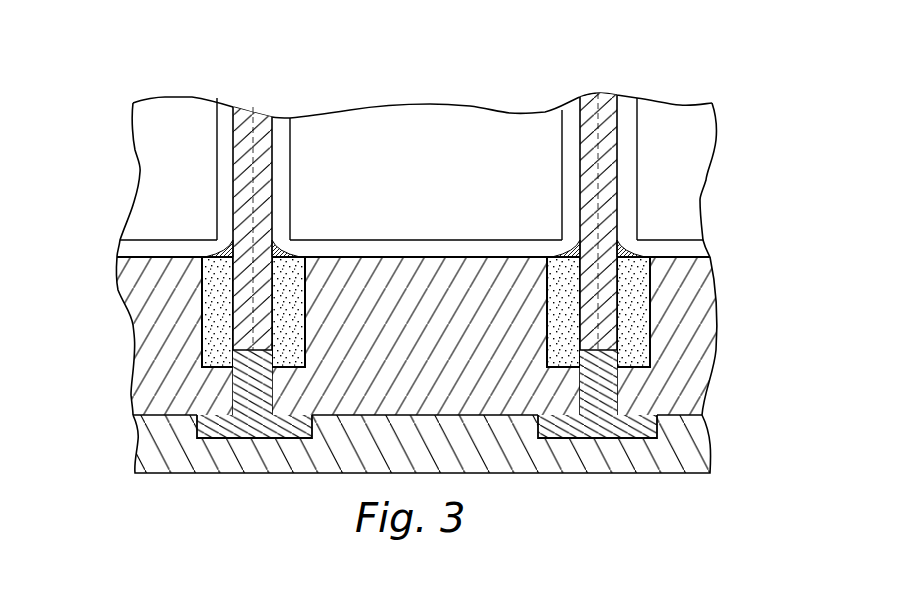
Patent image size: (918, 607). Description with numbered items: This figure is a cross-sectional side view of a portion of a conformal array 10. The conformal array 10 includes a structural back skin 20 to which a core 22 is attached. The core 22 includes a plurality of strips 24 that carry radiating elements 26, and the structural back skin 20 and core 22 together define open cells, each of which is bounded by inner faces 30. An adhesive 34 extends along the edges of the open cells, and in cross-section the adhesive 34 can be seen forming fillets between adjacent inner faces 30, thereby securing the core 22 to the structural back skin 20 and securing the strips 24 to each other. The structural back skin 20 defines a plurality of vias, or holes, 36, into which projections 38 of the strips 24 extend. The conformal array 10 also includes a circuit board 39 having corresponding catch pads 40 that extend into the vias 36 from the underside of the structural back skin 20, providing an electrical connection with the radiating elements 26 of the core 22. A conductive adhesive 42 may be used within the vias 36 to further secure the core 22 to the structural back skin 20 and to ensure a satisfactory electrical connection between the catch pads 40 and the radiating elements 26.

The conformal array 10 is at (652, 48).
The structural back skin 20 is at (128, 344).
The core 22 is at (118, 206).
The strips 24 is at (233, 140).
The radiating elements 26 is at (253, 115).
The inner faces 30 is at (181, 186).
The adhesive 34 is at (223, 252).
The vias 36 is at (202, 336).
The projections 38 is at (305, 366).
The circuit board 39 is at (134, 455).
The catch pads 40 is at (237, 440).
The conductive adhesive 42 is at (273, 327).